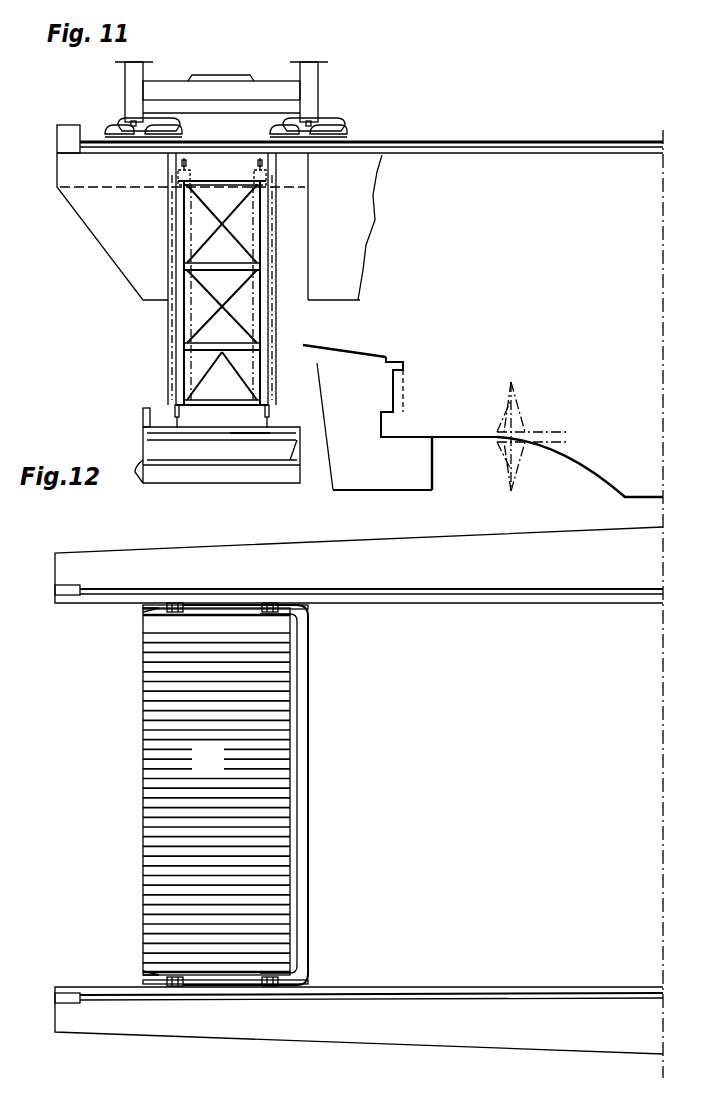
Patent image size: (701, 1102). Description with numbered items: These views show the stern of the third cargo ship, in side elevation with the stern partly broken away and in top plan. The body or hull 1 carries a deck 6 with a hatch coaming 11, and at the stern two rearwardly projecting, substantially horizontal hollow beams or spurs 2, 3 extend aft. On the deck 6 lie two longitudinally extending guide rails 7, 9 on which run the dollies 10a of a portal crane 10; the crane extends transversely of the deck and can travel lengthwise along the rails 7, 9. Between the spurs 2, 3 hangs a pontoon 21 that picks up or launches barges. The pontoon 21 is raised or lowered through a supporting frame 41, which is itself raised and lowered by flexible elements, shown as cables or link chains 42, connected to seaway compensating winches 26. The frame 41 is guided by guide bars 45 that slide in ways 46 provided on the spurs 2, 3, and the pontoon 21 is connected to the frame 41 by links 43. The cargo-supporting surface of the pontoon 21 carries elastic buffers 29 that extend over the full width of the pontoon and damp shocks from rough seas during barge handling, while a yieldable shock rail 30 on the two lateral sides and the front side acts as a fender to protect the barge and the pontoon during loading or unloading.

In FIG. 11, the hull 1 is at (478, 251).
In FIG. 11, the spur 2 is at (92, 216).
In FIG. 12, the spur 2 is at (118, 553).
In FIG. 12, the spur 3 is at (95, 1022).
In FIG. 11, the deck 6 is at (524, 157).
In FIG. 12, the deck 6 is at (521, 801).
In FIG. 12, the guide rail 7 is at (449, 595).
In FIG. 11, the guide rail 9 is at (468, 141).
In FIG. 12, the guide rail 9 is at (401, 992).
In FIG. 11, the portal crane 10 is at (222, 77).
In FIG. 11, the dollies 10a is at (262, 131).
In FIG. 12, the hatch coaming 11 is at (307, 799).
In FIG. 11, the pontoon 21 is at (215, 482).
In FIG. 11, the seaway compensating winches 26 is at (170, 175).
In FIG. 11, the buffers 29 is at (207, 470).
In FIG. 12, the buffers 29 is at (221, 770).
In FIG. 11, the shock rail 30 is at (238, 430).
In FIG. 12, the shock rail 30 is at (187, 614).
In FIG. 11, the supporting frame 41 is at (176, 380).
In FIG. 12, the supporting frame 41 is at (233, 605).
In FIG. 11, the cables or link chains 42 is at (186, 320).
In FIG. 11, the links 43 is at (175, 418).
In FIG. 11, the guide bars 45 is at (172, 344).
In FIG. 11, the ways 46 is at (170, 235).